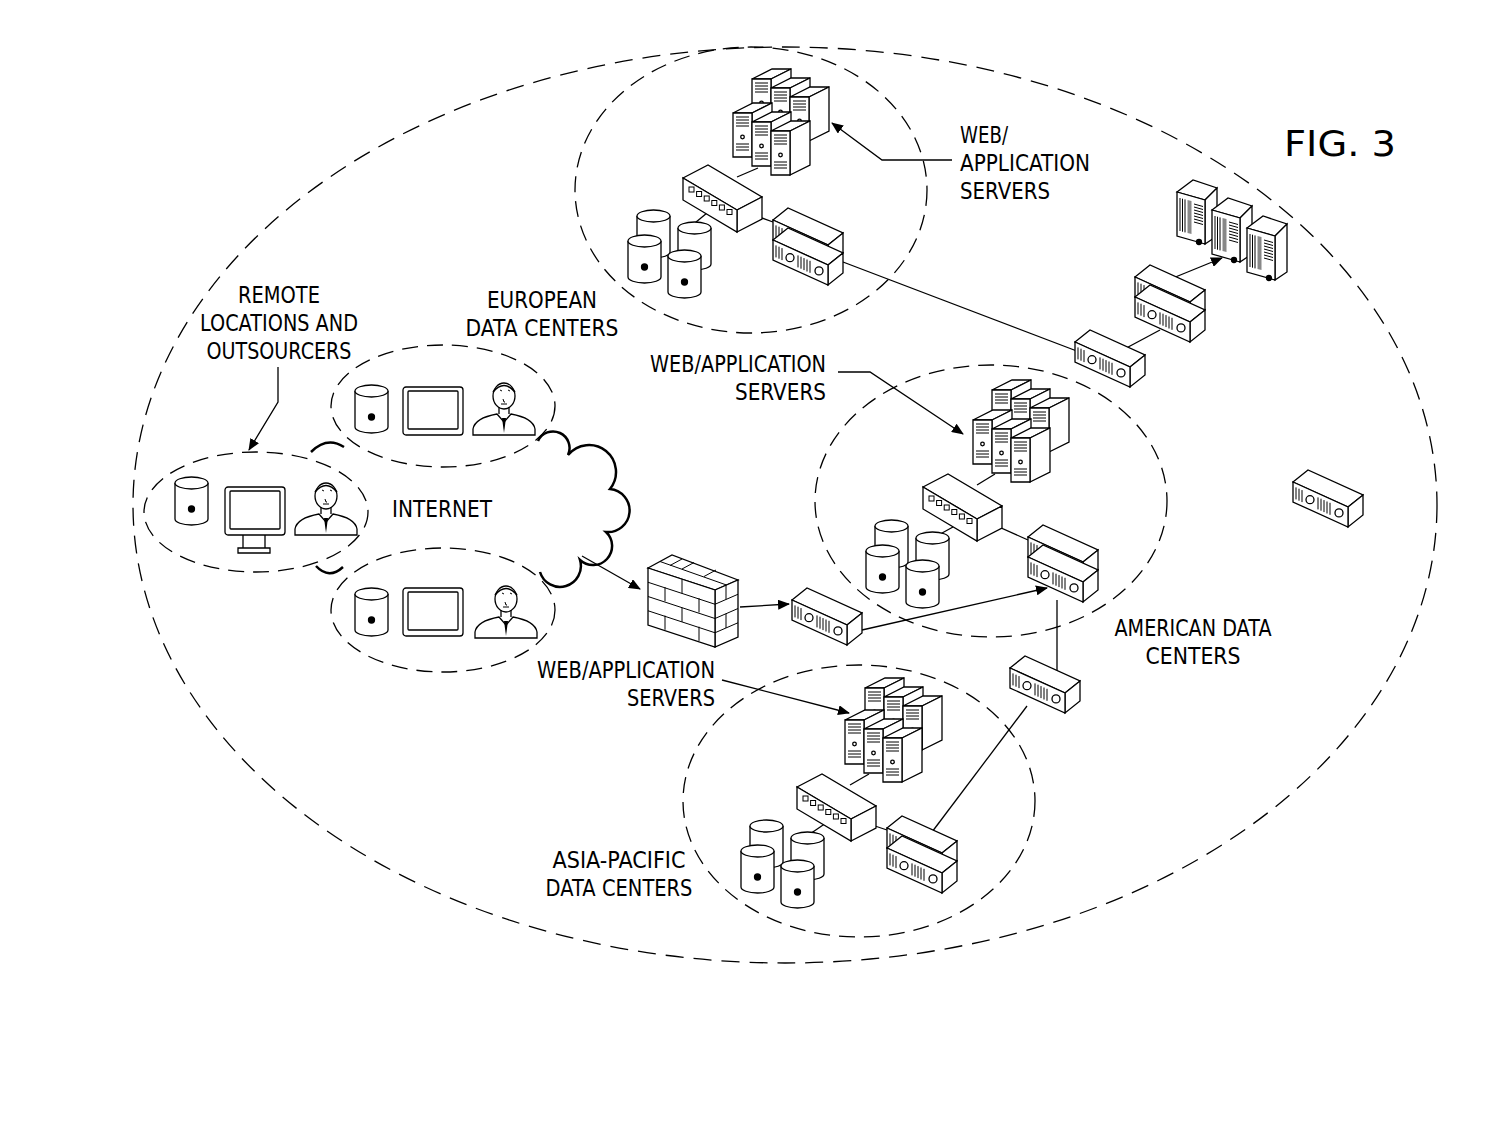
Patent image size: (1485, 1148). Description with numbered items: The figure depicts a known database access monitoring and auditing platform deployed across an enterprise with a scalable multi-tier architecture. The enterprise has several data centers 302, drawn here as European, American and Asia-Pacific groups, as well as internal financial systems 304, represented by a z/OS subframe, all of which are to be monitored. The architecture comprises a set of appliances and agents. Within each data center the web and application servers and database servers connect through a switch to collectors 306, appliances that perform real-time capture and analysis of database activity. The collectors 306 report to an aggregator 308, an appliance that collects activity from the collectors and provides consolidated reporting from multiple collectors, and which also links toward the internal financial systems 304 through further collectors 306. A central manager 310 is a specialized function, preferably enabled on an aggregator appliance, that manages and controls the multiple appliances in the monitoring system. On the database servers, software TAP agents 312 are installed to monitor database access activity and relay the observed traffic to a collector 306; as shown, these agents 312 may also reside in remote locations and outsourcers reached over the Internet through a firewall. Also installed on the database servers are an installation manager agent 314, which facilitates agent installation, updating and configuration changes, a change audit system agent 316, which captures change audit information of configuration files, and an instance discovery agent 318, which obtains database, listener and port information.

The data centers 302 is at (580, 232).
The internal financial systems 304 is at (1282, 277).
The collectors 306 is at (806, 218).
The aggregators 308 is at (1140, 382).
The central manager 310 is at (1356, 523).
The software TAP agent 312 is at (688, 283).
The installation manager agent 314 is at (653, 216).
The change audit system agent 316 is at (892, 528).
The instance discovery agent 318 is at (767, 826).